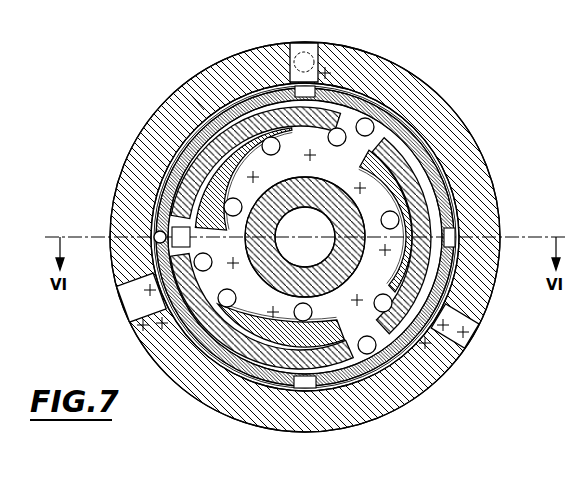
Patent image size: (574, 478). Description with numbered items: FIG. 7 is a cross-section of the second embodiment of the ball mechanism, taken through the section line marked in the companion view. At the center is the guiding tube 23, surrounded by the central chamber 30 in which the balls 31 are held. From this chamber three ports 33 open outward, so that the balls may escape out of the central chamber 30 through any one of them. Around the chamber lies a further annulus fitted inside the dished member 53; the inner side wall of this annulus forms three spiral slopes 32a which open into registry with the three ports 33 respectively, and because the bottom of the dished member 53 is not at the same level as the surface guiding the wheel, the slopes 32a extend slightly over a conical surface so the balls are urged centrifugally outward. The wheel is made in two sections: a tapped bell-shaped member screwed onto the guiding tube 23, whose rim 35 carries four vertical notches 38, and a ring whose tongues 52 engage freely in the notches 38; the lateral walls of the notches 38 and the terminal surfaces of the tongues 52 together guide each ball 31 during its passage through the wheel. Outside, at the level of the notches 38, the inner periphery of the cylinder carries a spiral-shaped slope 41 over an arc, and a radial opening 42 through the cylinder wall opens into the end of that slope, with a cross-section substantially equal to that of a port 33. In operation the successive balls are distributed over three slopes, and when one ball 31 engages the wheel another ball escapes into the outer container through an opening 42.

The guiding tube 23 is at (318, 192).
The central chamber 30 is at (232, 325).
The ball 31 is at (383, 294).
The spiral slopes 32a is at (205, 177).
The ports 33 is at (367, 336).
The rim 35 is at (458, 272).
The notches 38 is at (158, 250).
The spiral-shaped slope 41 is at (123, 293).
The radial opening 42 is at (140, 335).
The tongues 52 is at (304, 386).
The dished member 53 is at (198, 103).